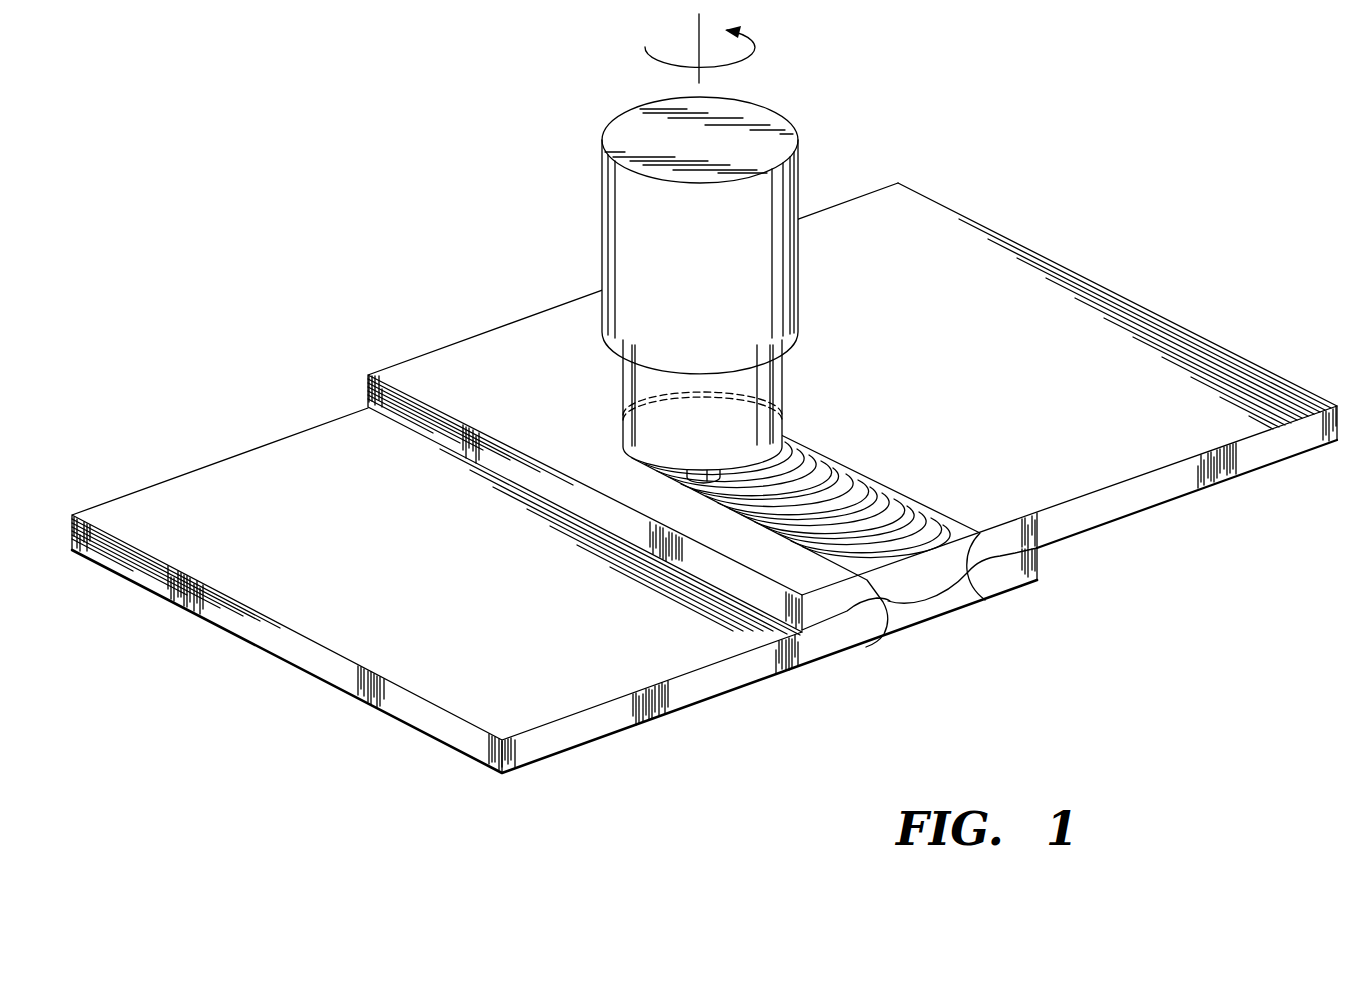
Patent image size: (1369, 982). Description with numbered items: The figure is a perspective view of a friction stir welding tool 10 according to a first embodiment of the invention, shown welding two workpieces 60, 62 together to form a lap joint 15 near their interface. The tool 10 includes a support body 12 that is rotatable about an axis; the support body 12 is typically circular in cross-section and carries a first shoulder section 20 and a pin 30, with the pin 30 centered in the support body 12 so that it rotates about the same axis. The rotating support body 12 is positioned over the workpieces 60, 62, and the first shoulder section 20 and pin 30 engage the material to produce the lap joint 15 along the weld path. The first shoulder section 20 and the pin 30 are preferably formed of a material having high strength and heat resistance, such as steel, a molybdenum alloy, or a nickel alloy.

The friction stir welding tool 10 is at (858, 128).
The support body 12 is at (626, 237).
The lap joint 15 is at (923, 583).
The first shoulder section 20 is at (662, 468).
The pin 30 is at (697, 486).
The workpiece 60 is at (1103, 322).
The workpiece 62 is at (615, 719).